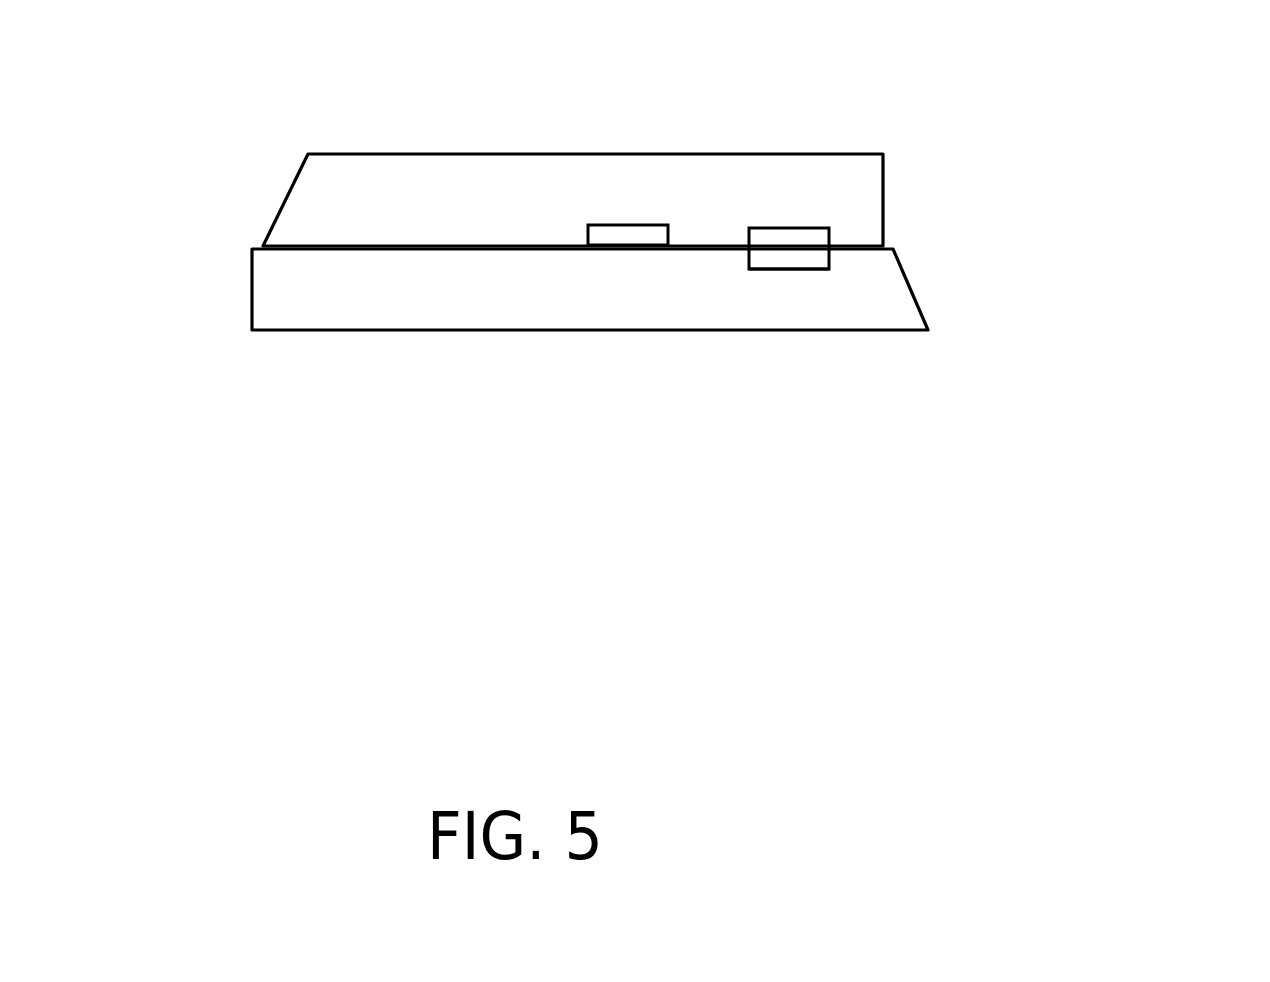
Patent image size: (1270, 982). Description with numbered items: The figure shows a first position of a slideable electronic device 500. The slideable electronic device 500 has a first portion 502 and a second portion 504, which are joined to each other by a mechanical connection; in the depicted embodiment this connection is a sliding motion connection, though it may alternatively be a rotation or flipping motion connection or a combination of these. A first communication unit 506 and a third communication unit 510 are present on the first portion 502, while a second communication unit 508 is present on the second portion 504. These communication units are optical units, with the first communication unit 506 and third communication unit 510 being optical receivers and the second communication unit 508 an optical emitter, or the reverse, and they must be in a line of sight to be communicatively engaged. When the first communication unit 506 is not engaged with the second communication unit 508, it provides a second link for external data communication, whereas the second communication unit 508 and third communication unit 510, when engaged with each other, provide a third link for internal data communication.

The slideable electronic device 500 is at (1246, 483).
The first portion 502 is at (883, 182).
The second portion 504 is at (905, 273).
The first communication unit 506 is at (788, 228).
The second communication unit 508 is at (800, 269).
The third communication unit 510 is at (628, 224).